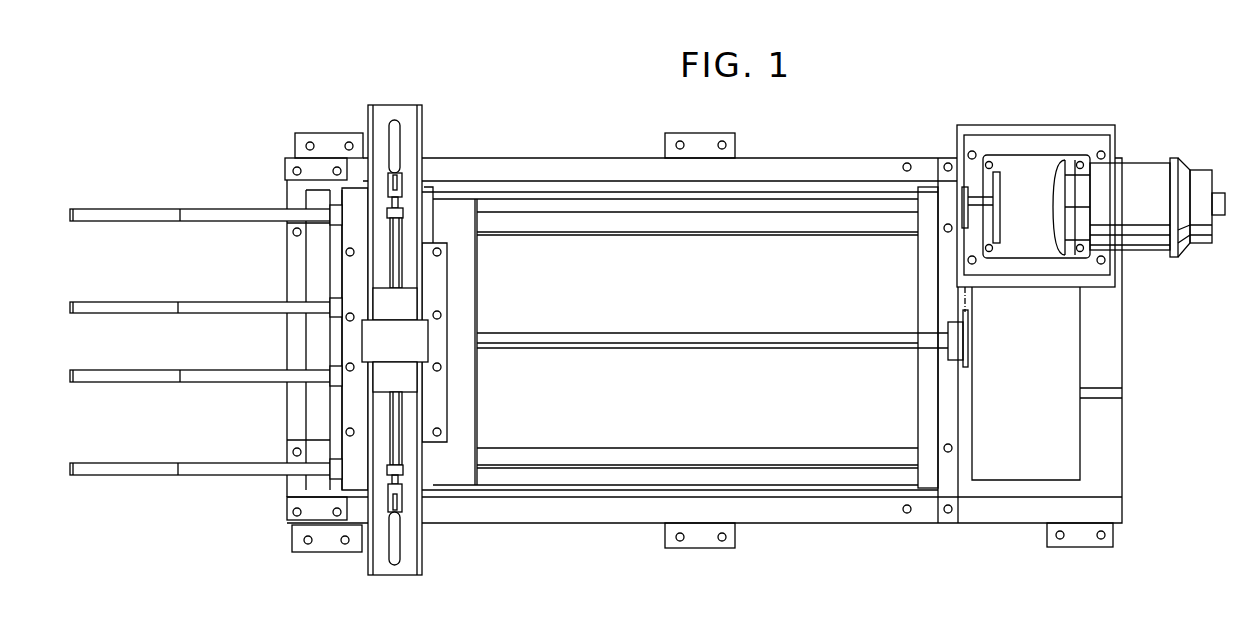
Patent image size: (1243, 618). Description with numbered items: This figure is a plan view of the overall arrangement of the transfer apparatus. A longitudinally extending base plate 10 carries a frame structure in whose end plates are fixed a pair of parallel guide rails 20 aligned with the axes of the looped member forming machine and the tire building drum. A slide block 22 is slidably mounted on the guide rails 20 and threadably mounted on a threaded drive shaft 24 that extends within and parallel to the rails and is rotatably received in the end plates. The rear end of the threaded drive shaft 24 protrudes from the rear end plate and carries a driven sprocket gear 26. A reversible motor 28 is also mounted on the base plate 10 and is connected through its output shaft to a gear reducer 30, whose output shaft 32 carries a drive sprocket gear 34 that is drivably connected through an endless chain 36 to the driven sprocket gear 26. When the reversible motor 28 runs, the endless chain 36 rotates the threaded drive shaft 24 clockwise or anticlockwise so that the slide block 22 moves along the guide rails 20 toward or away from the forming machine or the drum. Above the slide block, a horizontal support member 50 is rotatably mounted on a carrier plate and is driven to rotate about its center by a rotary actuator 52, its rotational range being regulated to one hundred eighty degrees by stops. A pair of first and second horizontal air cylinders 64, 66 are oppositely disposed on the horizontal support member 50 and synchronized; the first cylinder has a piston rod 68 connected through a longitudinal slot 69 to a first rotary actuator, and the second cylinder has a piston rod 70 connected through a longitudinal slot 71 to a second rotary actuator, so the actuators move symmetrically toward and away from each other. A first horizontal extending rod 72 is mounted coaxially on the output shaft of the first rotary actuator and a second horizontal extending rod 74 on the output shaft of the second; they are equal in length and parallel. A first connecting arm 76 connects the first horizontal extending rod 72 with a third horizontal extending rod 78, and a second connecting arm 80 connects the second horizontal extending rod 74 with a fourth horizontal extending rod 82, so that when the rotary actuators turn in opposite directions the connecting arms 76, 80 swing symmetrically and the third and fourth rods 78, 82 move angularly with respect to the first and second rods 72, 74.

The base plate 10 is at (778, 523).
The guide rails 20 is at (755, 233).
The slide block 22 is at (463, 260).
The threaded drive shaft 24 is at (741, 333).
The driven sprocket gear 26 is at (968, 358).
The reversible motor 28 is at (1150, 168).
The gear reducer 30 is at (1037, 158).
The output shaft 32 is at (977, 197).
The drive sprocket gear 34 is at (968, 217).
The endless chain 36 is at (966, 303).
The horizontal support member 50 is at (410, 573).
The rotary actuator 52 is at (415, 338).
The first horizontal air cylinder 64 is at (391, 263).
The second horizontal air cylinder 66 is at (397, 413).
The piston rod 68 is at (398, 202).
The longitudinal slot 69 is at (398, 135).
The piston rod 70 is at (397, 482).
The longitudinal slot 71 is at (396, 530).
The first horizontal extending rod 72 is at (216, 218).
The second horizontal extending rod 74 is at (216, 473).
The first connecting arm 76 is at (335, 257).
The third horizontal extending rod 78 is at (232, 311).
The second connecting arm 80 is at (330, 397).
The fourth horizontal extending rod 82 is at (232, 381).